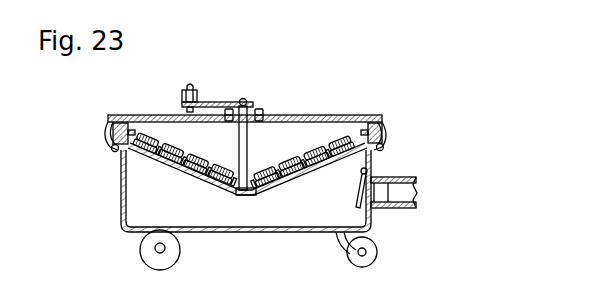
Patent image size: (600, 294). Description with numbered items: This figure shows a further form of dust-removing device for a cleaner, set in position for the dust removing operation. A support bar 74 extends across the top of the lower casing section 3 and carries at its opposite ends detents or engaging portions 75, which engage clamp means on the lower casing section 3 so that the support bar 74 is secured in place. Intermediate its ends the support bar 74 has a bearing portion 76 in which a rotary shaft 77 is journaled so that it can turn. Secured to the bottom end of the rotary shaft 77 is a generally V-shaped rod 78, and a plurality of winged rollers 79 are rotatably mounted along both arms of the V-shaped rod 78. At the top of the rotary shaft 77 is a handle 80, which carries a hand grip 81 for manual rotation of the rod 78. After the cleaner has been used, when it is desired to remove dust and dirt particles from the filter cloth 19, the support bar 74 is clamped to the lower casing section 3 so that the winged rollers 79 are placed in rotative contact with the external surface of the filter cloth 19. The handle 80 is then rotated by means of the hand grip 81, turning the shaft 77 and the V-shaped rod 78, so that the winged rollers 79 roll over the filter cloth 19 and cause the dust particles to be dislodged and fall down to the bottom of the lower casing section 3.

The lower casing section 3 is at (253, 233).
The filter cloth 19 is at (162, 168).
The support bar 74 is at (342, 115).
The detents 75 is at (106, 135).
The bearing portion 76 is at (259, 109).
The rotary shaft 77 is at (243, 148).
The V-shaped rod 78 is at (224, 196).
The winged rollers 79 is at (145, 147).
The handle 80 is at (213, 102).
The hand grip 81 is at (183, 95).